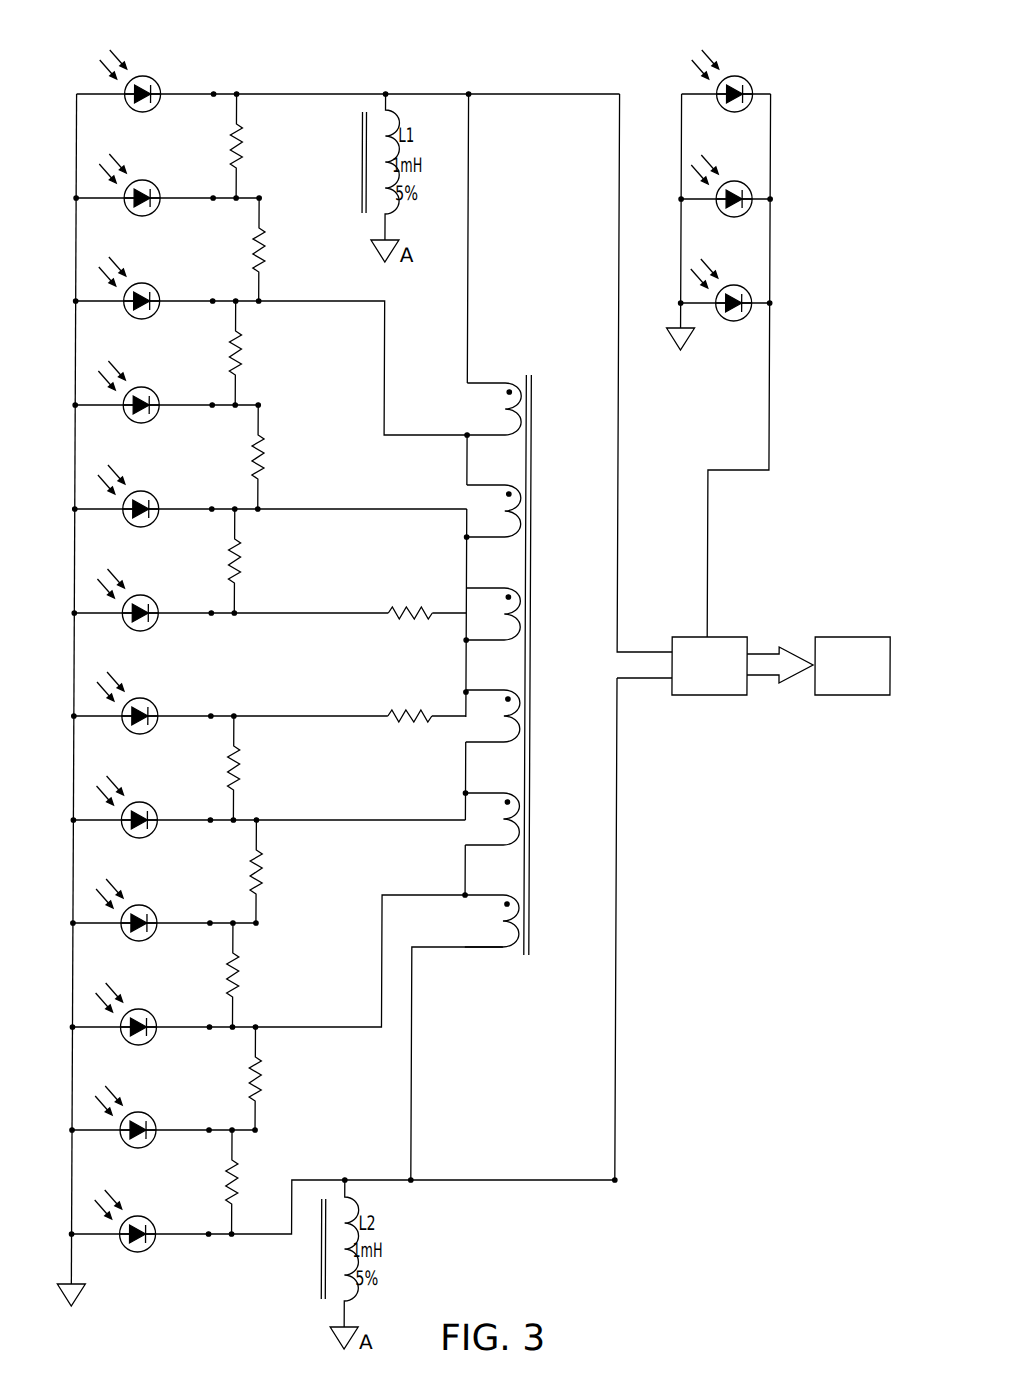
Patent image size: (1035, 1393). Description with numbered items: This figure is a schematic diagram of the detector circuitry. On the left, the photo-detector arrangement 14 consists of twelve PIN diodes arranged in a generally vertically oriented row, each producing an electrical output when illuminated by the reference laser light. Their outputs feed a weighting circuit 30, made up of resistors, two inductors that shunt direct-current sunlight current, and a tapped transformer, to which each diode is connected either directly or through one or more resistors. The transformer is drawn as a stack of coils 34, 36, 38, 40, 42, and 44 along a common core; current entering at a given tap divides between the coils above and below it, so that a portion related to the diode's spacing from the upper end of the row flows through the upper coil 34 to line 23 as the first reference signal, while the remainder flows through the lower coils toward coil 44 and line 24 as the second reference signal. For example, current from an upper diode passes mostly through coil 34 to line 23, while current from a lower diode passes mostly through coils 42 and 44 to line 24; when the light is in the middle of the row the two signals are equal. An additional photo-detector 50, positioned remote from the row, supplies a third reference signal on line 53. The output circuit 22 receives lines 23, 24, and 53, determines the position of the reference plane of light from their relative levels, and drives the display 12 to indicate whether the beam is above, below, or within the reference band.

The photo-detector arrangement 14 is at (88, 74).
The weighting circuit 30 is at (577, 83).
The coil 34 is at (522, 376).
The coil 36 is at (527, 527).
The coil 38 is at (527, 630).
The coil 40 is at (527, 732).
The coil 42 is at (527, 835).
The coil 44 is at (527, 937).
The line 23 is at (620, 418).
The line 24 is at (620, 768).
The line 53 is at (771, 410).
The additional photo-detector 50 is at (816, 120).
The output circuit 22 is at (713, 697).
The display 12 is at (847, 637).